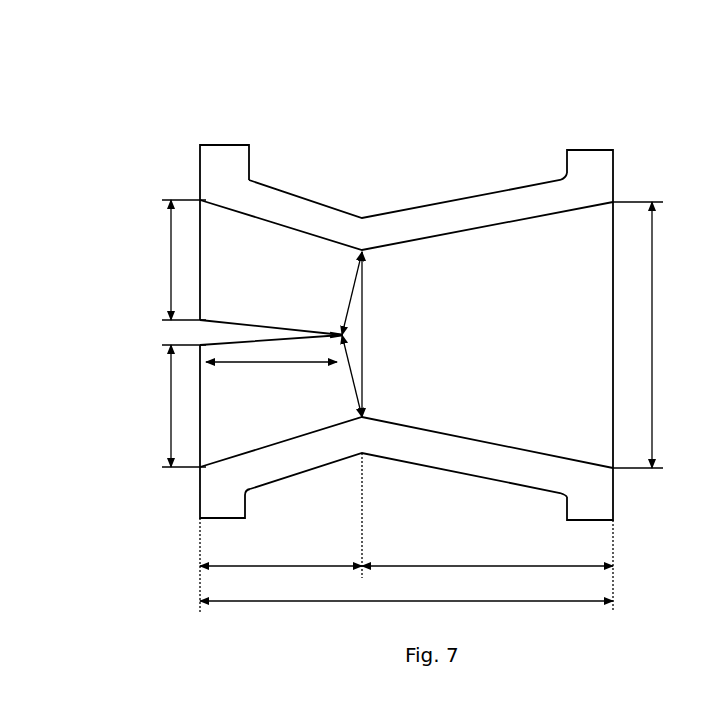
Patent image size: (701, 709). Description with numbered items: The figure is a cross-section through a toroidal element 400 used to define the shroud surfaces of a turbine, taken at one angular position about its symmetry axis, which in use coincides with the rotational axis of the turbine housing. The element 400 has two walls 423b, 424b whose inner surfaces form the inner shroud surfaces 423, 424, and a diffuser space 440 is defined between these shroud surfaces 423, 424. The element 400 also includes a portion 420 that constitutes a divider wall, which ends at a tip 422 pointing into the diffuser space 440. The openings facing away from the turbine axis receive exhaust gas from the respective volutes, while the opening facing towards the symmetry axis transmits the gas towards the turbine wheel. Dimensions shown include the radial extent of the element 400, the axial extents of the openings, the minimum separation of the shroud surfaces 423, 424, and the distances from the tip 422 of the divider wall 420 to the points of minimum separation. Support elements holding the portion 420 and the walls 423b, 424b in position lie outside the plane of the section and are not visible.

The element 400 is at (160, 151).
The divider wall portion 420 is at (220, 332).
The tip of the divider wall 422 is at (342, 335).
The inner shroud surface 424 is at (415, 237).
The wall 424b is at (467, 208).
The diffuser space 440 is at (493, 280).
The inner shroud surface 423 is at (475, 442).
The wall 423b is at (512, 465).